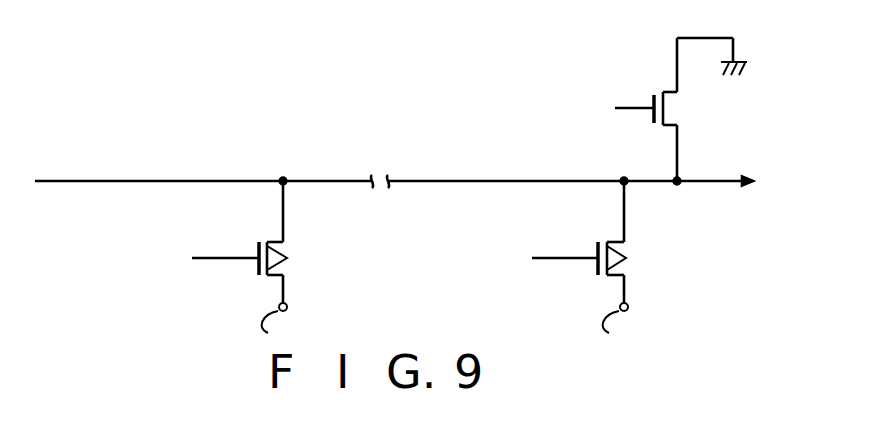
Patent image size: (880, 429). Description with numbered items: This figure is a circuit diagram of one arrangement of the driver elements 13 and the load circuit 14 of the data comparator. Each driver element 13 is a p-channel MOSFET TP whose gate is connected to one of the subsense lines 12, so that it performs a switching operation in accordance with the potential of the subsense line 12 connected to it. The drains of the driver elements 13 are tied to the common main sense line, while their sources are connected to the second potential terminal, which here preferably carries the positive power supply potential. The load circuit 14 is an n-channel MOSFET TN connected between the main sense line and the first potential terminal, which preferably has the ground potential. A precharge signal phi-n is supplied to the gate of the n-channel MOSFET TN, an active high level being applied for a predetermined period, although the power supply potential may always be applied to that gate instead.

The subsense line 12 is at (231, 257).
The driver element 13 is at (300, 238).
The load circuit 14 is at (654, 80).